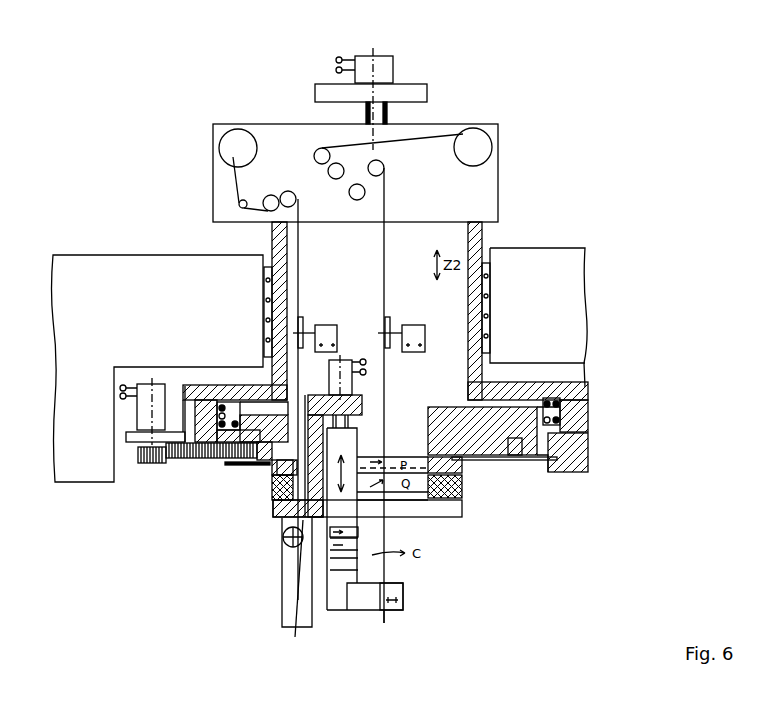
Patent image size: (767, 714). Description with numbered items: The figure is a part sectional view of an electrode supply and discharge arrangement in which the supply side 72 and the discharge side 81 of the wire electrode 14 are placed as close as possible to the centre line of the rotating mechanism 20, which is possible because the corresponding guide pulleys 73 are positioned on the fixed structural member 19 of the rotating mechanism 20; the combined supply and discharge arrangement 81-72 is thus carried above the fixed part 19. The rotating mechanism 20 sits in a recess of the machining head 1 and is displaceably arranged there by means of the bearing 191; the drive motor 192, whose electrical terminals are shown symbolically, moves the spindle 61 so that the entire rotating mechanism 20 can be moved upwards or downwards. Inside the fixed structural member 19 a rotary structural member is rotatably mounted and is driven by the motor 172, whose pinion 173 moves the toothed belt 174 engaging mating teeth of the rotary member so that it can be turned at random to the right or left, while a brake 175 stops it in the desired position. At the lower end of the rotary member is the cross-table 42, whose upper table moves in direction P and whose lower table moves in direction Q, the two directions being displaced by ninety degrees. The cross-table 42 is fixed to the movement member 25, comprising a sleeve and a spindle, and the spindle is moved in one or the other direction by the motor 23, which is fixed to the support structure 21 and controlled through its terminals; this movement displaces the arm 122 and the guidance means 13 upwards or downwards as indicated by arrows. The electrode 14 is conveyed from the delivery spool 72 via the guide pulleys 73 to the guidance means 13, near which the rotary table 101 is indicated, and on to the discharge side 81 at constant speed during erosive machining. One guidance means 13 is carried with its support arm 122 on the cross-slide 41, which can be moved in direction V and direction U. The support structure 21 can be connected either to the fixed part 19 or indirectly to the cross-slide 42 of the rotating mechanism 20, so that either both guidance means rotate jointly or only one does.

The machining head 1 is at (572, 275).
The guidance means 13 is at (400, 602).
The electrode 14 is at (393, 615).
The fixed structural member 19 is at (482, 233).
The rotating mechanism 20 is at (662, 372).
The support structure 21 is at (362, 403).
The motor 23 is at (362, 376).
The movement member 25 is at (357, 440).
The cross-slide 41 is at (363, 533).
The cross-table 42 is at (462, 487).
The spindle 61 is at (387, 110).
The delivery spool 72 is at (225, 152).
The guide pulleys 73 is at (306, 320).
The discharge side 81 is at (488, 150).
The pulley housing 81-72 is at (480, 202).
The rotary table 101 is at (357, 565).
The arm 122 is at (340, 610).
The motor 172 is at (157, 383).
The pinion 173 is at (158, 463).
The toothed belt 174 is at (182, 462).
The brake 175 is at (552, 470).
The bearing 191 is at (262, 270).
The drive motor 192 is at (390, 57).